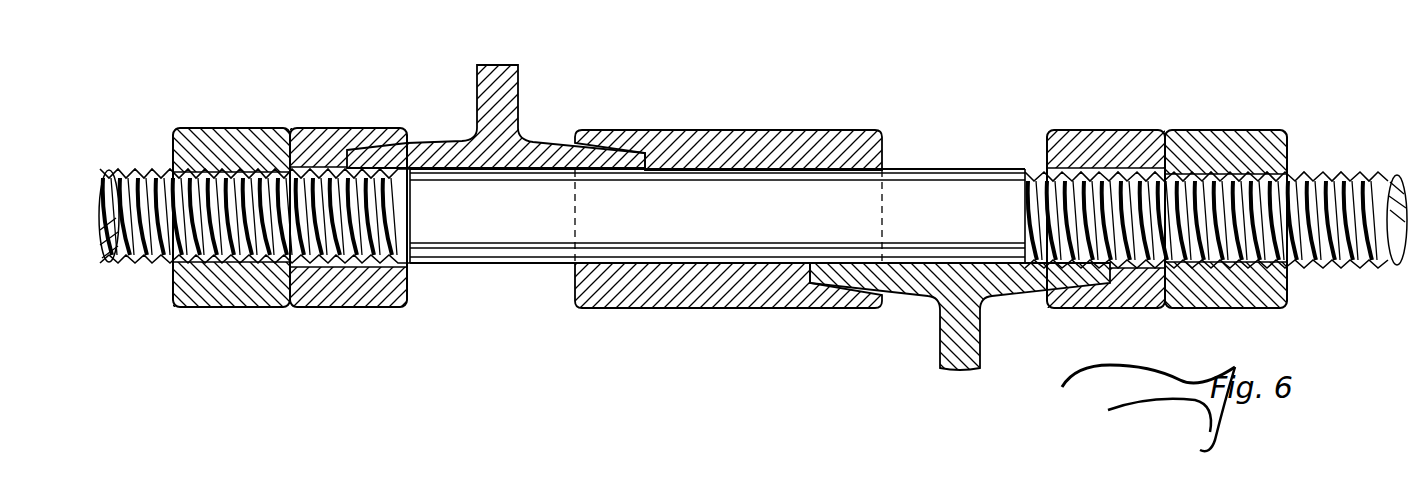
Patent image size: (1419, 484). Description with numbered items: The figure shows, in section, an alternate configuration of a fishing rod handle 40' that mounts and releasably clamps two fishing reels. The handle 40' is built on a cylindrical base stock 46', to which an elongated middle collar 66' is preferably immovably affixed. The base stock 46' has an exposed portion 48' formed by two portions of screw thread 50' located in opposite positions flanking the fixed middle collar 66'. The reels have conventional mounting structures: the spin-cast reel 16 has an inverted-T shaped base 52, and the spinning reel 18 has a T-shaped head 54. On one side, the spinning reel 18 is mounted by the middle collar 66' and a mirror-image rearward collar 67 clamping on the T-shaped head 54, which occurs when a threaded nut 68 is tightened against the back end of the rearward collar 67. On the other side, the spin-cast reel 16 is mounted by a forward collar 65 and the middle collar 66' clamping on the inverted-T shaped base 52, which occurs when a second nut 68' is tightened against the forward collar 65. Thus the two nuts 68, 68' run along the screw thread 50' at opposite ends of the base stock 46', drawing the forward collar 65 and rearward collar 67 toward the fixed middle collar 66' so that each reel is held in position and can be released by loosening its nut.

The handle 40' is at (754, 221).
The screw thread 50' is at (754, 224).
The second nut 68' is at (233, 203).
The forward collar 65 is at (350, 128).
The spin-cast reel 16 is at (496, 116).
The inverted-T shaped base 52 is at (512, 87).
The elongated middle collar 66' is at (730, 203).
The cylindrical base stock 46' is at (720, 227).
The exposed portion 48' is at (720, 198).
The spinning reel 18 is at (960, 321).
The T-shaped head 54 is at (940, 357).
The rearward collar 67 is at (1110, 130).
The threaded nut 68 is at (1226, 207).